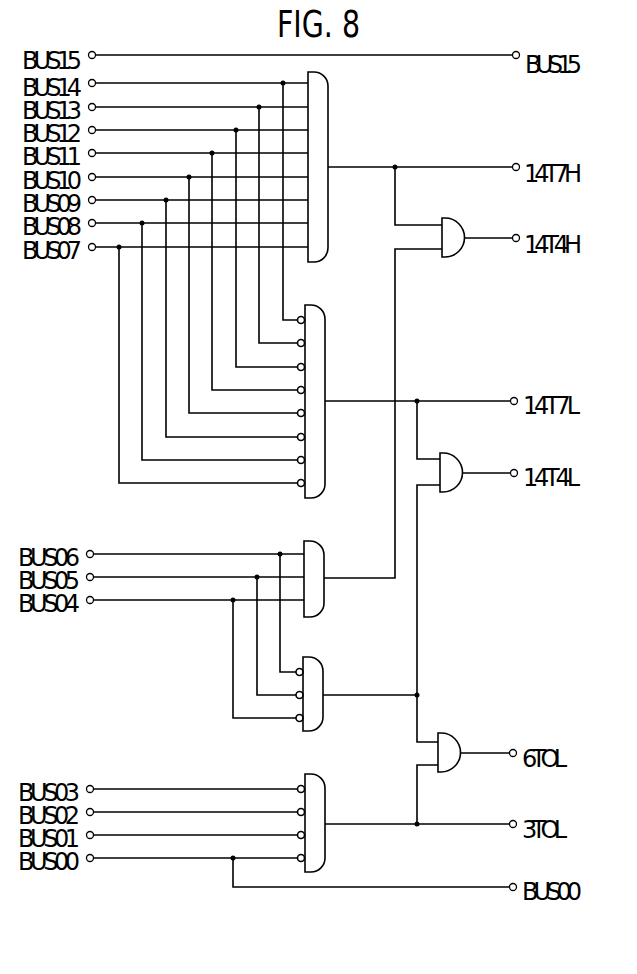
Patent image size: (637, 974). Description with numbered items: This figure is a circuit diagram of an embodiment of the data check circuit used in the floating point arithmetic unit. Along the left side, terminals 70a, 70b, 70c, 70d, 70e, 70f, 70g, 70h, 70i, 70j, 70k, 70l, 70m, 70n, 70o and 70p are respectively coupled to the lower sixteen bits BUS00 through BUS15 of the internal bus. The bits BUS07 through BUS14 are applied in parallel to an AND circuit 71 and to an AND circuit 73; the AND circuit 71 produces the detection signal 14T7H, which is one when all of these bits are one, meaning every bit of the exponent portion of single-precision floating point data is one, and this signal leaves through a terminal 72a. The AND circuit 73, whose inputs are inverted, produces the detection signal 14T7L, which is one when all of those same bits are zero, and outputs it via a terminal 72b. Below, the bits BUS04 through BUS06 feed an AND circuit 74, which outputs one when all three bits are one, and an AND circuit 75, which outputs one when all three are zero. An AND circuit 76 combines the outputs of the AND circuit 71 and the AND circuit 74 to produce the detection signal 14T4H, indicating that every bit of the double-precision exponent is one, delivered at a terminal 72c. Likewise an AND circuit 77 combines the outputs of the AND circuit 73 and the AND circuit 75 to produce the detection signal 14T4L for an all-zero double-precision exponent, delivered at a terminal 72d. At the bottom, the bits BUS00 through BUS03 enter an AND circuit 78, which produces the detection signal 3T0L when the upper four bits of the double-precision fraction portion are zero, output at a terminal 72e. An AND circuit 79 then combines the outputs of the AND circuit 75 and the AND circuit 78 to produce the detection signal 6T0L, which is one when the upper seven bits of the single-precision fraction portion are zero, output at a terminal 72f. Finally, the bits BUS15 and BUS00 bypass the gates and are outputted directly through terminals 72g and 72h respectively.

The terminal 70a is at (93, 855).
The terminal 70b is at (93, 832).
The terminal 70c is at (93, 809).
The terminal 70d is at (93, 786).
The terminal 70e is at (93, 597).
The terminal 70f is at (93, 574).
The terminal 70g is at (93, 551).
The terminal 70h is at (95, 244).
The terminal 70i is at (95, 220).
The terminal 70j is at (95, 197).
The terminal 70k is at (95, 174).
The terminal 70l is at (95, 150).
The terminal 70m is at (95, 127).
The terminal 70n is at (95, 104).
The terminal 70o is at (95, 80).
The terminal 70p is at (95, 52).
The AND circuit 71 is at (329, 116).
The AND circuit 73 is at (326, 356).
The AND circuit 74 is at (325, 560).
The AND circuit 75 is at (323, 677).
The AND circuit 76 is at (455, 206).
The AND circuit 77 is at (454, 441).
The AND circuit 78 is at (326, 795).
The AND circuit 79 is at (452, 721).
The terminal 72a is at (516, 163).
The terminal 72b is at (514, 397).
The terminal 72c is at (516, 234).
The terminal 72d is at (514, 469).
The terminal 72e is at (513, 820).
The terminal 72f is at (513, 749).
The terminal 72g is at (516, 51).
The terminal 72h is at (513, 883).